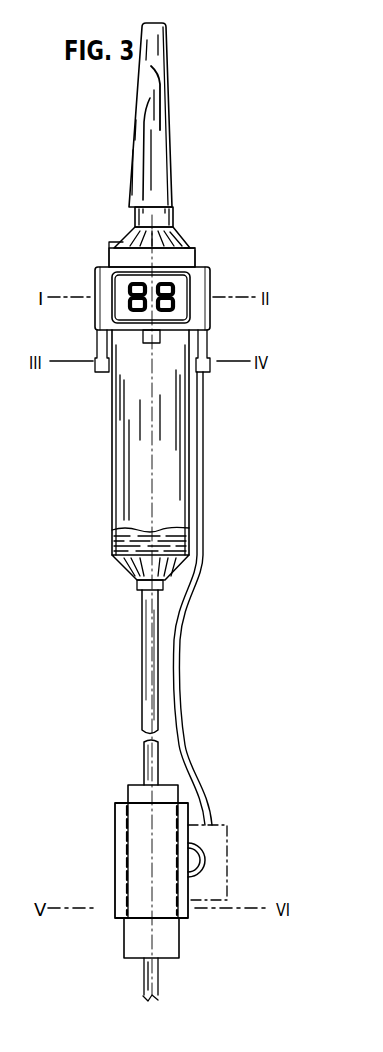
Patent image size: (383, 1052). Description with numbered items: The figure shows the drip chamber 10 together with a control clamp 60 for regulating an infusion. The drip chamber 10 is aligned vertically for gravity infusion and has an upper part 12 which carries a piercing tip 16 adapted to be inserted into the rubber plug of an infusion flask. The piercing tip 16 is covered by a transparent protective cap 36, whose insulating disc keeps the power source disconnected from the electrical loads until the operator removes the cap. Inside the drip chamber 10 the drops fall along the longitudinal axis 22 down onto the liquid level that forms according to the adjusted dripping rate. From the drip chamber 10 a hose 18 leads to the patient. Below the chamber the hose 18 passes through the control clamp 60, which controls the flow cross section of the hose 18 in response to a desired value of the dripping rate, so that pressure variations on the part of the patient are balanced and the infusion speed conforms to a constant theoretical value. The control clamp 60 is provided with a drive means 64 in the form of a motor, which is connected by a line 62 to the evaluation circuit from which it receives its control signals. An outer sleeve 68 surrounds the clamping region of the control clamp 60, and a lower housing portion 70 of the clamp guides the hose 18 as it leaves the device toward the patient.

The drip chamber 10 is at (105, 452).
The upper part 12 is at (173, 228).
The piercing tip 16 is at (170, 143).
The hose 18 is at (150, 757).
The longitudinal axis 22 is at (149, 437).
The protective cap 36 is at (168, 72).
The control clamp 60 is at (97, 935).
The line 62 is at (180, 640).
The drive means 64 is at (220, 878).
The outer sleeve 68 is at (116, 849).
The sensor housing block 70 is at (130, 946).